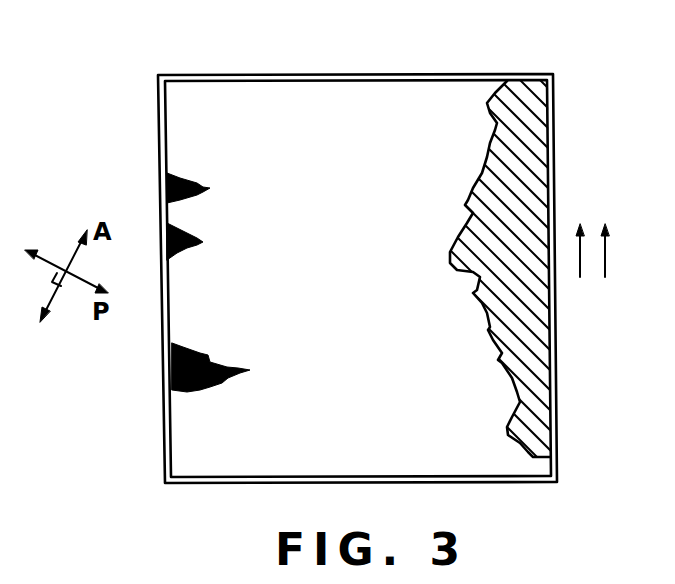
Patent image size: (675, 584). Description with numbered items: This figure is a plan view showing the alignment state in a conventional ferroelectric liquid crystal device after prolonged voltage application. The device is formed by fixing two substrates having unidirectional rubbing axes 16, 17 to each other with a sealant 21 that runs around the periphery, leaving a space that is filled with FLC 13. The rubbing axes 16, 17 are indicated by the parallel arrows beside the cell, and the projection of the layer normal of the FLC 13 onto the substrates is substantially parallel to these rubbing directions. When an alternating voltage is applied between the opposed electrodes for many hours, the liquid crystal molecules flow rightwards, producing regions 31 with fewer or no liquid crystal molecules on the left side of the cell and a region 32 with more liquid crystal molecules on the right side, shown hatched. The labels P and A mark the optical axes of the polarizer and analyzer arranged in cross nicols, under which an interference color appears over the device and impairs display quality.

The FLC 13 is at (277, 102).
The sealant 21 is at (388, 75).
The regions with less or lacking liquid crystal molecules 31 is at (210, 188).
The region with more liquid crystal molecules 32 is at (535, 362).
The rubbing axis 16 is at (577, 251).
The rubbing axis 17 is at (609, 256).